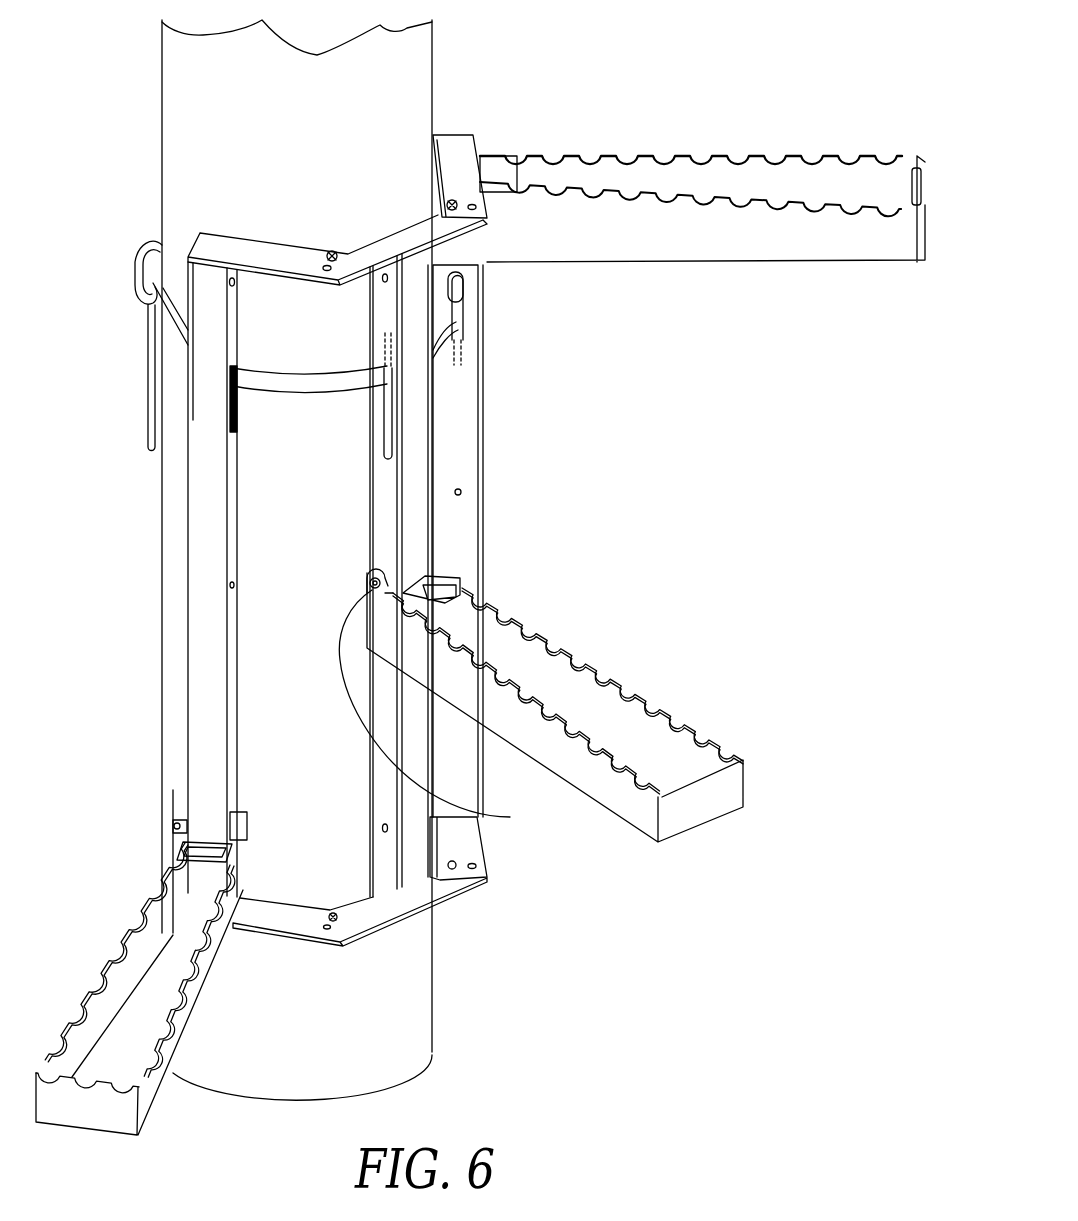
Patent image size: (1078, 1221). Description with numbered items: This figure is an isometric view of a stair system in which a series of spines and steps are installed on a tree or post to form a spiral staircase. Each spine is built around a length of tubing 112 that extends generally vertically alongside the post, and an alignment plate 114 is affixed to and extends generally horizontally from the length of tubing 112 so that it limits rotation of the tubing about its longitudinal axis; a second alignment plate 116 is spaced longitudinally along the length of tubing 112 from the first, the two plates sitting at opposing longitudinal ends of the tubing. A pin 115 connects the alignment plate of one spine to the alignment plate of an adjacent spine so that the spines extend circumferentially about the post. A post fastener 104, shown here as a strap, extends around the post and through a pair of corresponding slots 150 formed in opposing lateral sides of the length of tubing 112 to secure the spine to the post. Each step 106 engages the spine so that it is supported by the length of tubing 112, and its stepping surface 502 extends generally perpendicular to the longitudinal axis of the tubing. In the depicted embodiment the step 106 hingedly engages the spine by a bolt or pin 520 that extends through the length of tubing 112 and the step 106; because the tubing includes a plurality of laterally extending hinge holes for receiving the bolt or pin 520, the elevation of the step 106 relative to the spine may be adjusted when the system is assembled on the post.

The post fastener 104 is at (178, 328).
The step 106 is at (877, 156).
The length of tubing 112 is at (480, 405).
The alignment plate 114 is at (378, 918).
The pin 115 is at (333, 912).
The second alignment plate 116 is at (377, 251).
The slots 150 is at (465, 328).
The stepping surface 502 is at (690, 153).
The bolt or pin 520 is at (510, 817).